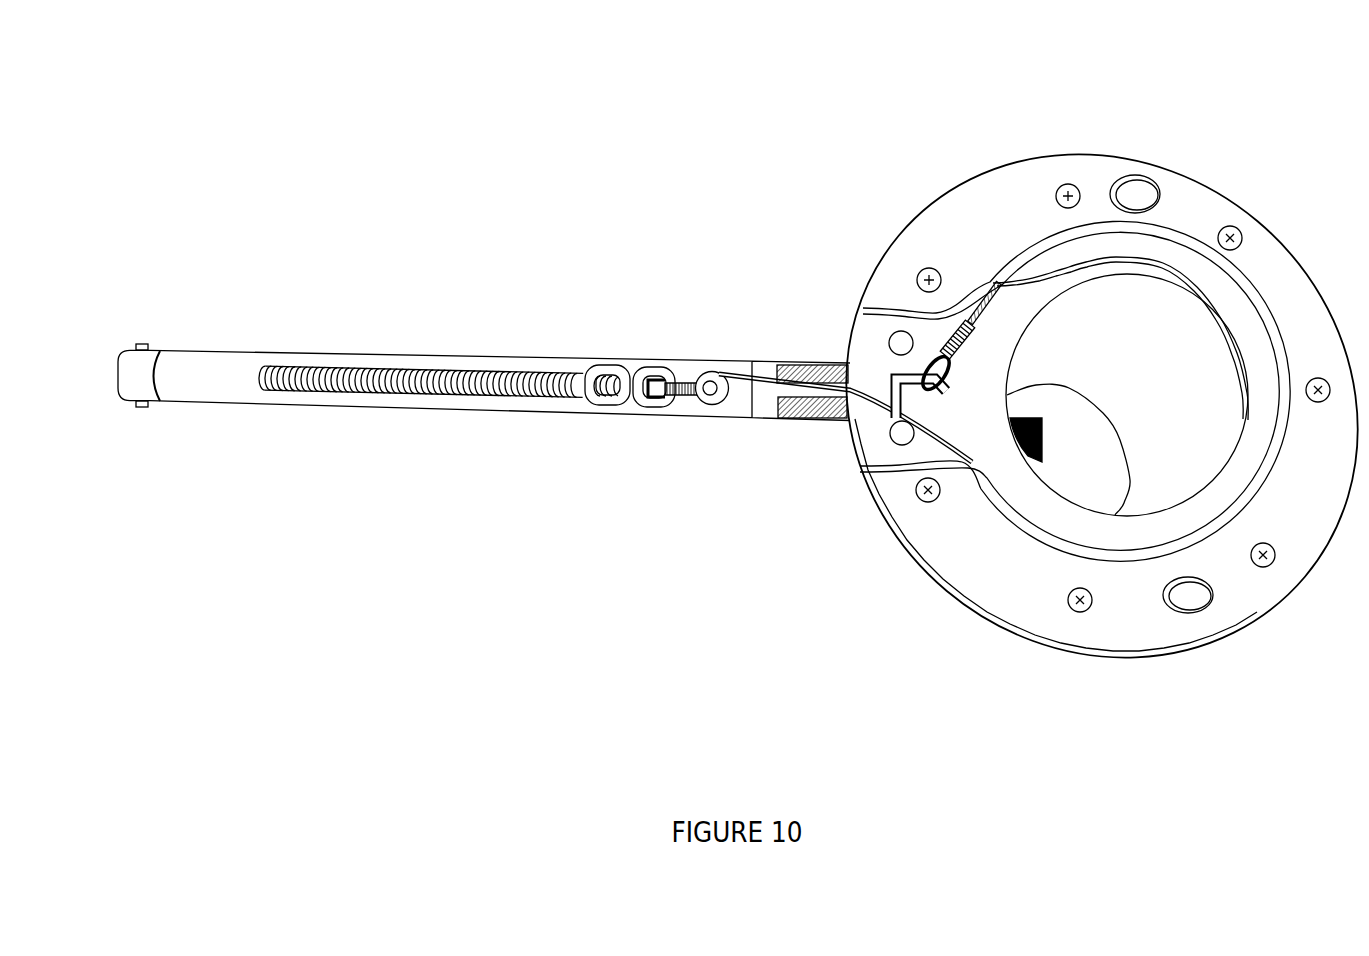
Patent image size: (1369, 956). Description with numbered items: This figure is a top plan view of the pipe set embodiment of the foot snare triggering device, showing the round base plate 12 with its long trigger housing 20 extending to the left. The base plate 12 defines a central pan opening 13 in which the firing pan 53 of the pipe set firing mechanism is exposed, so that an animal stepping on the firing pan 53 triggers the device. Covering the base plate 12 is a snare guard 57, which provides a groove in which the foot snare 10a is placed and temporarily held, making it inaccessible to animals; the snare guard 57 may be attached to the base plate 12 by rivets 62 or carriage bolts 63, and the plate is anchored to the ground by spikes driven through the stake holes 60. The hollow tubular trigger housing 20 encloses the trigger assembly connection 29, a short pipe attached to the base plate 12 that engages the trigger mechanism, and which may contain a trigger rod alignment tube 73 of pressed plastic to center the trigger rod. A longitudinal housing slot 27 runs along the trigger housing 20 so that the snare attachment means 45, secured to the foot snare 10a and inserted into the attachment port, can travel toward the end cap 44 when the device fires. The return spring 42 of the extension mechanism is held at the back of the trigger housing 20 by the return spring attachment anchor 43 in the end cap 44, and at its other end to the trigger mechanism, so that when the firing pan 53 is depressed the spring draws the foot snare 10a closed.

The foot snare 10a is at (852, 368).
The base plate 12 is at (877, 437).
The pan opening 13 is at (1120, 302).
The trigger housing 20 is at (227, 378).
The housing slot 27 is at (432, 370).
The trigger assembly connection 29 is at (763, 410).
The return spring 42 is at (375, 390).
The return spring attachment anchor 43 is at (140, 344).
The end cap 44 is at (131, 380).
The snare attachment means 45 is at (714, 371).
The firing pan 53 is at (1042, 420).
The snare guard 57 is at (1141, 625).
The stake holes 60 is at (1195, 613).
The rivets 62 is at (1063, 184).
The carriage bolts 63 is at (903, 331).
The trigger rod alignment tube 73 is at (821, 420).